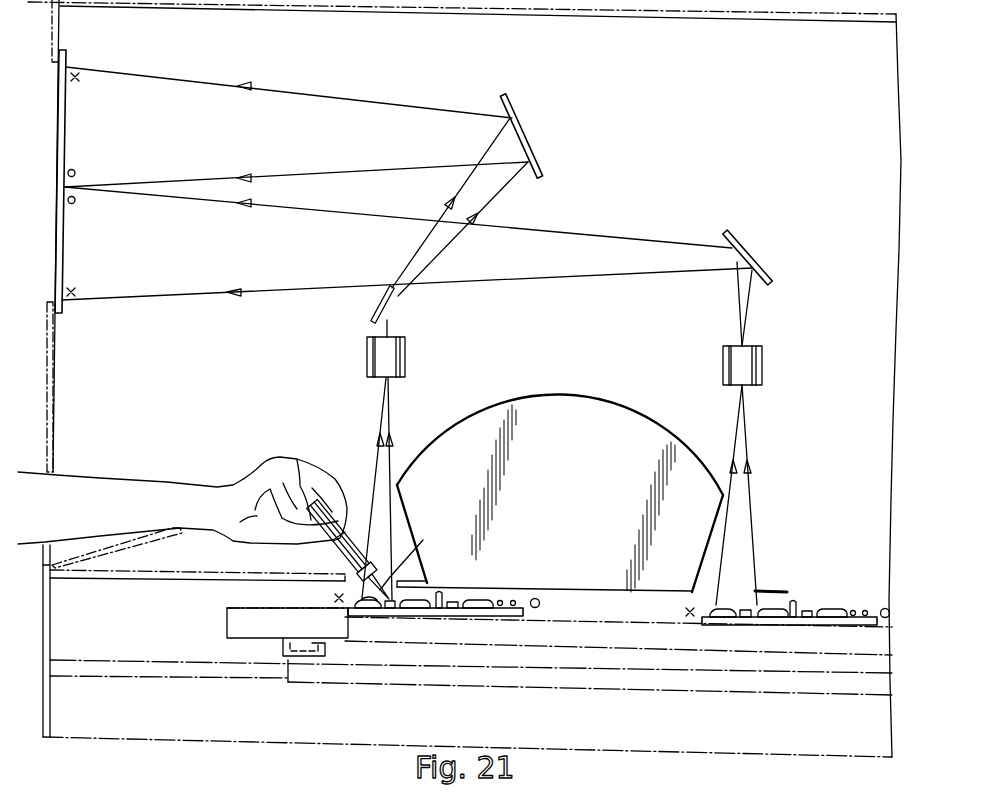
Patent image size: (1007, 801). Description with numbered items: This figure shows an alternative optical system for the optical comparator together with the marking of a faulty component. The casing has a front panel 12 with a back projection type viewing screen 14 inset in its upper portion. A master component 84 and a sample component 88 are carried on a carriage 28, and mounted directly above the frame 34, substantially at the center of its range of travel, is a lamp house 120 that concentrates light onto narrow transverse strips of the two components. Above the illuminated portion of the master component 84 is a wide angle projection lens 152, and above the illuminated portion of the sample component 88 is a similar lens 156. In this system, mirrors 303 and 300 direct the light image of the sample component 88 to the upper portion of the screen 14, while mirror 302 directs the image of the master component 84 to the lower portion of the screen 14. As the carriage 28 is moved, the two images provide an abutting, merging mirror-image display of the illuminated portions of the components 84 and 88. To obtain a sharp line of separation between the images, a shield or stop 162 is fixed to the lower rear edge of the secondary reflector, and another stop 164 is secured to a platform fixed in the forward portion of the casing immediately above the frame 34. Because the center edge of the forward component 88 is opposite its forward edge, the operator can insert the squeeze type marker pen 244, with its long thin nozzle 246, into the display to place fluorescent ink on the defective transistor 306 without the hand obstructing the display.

The viewing screen 14 is at (57, 108).
The front panel 12 is at (53, 383).
The mirror 300 is at (525, 124).
The mirror 302 is at (748, 249).
The mirror 303 is at (380, 293).
The projection lens 156 is at (377, 351).
The wide angle projection lens 152 is at (762, 356).
The lamp house 120 is at (599, 396).
The stop 164 is at (410, 580).
The nozzle 246 is at (418, 556).
The shield or stop 162 is at (773, 590).
The squeeze type pen 244 is at (337, 545).
The frame 34 is at (217, 613).
The sample component 88 is at (480, 618).
The defective transistor 306 is at (380, 609).
The master component 84 is at (760, 623).
The carriage 28 is at (336, 687).